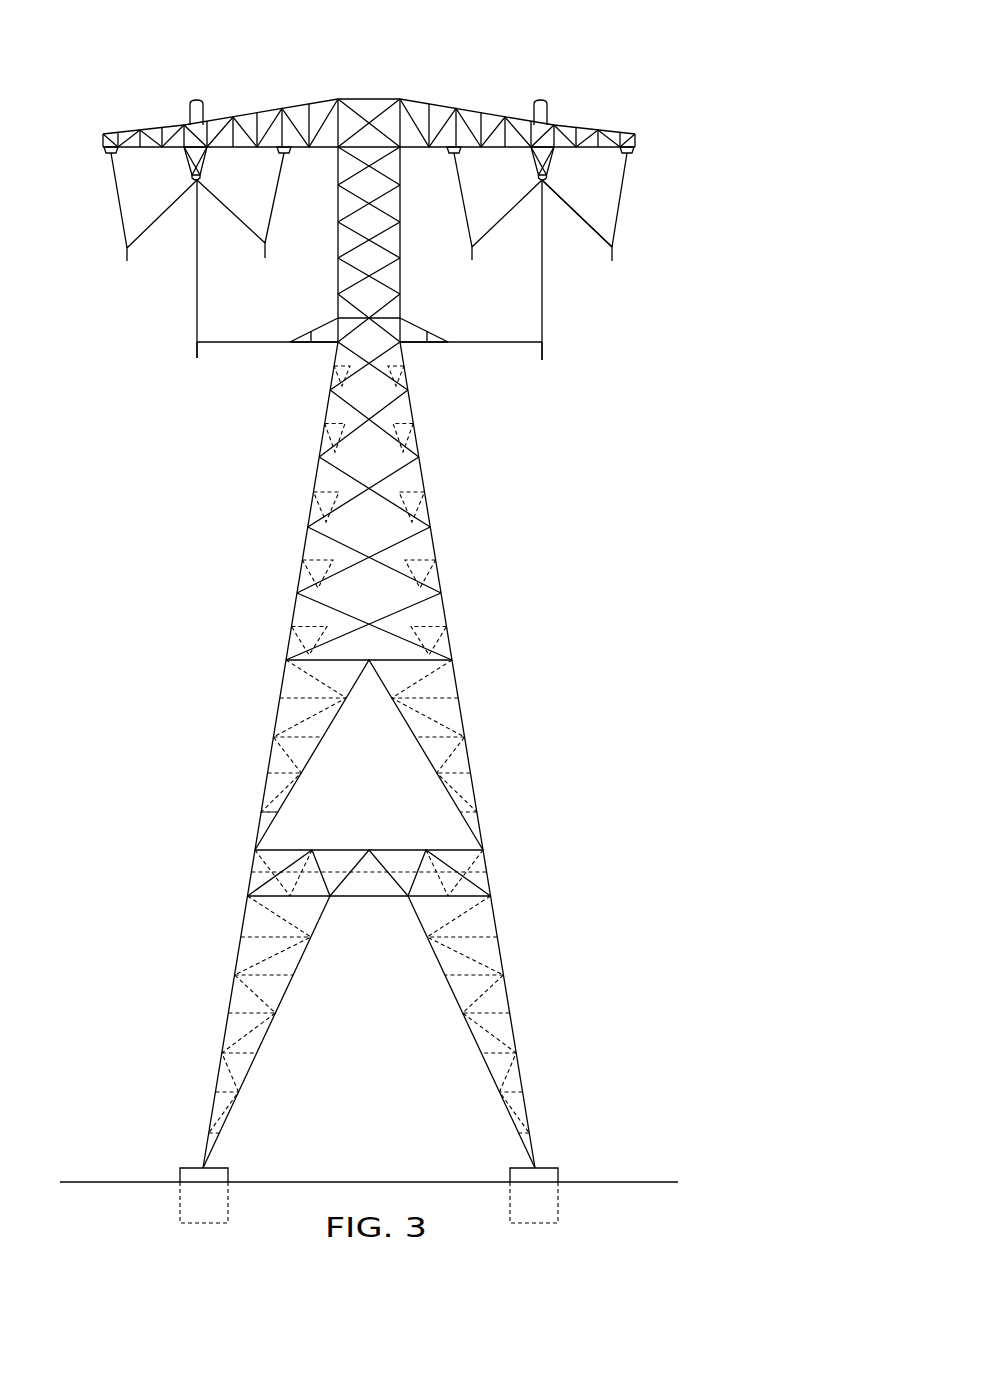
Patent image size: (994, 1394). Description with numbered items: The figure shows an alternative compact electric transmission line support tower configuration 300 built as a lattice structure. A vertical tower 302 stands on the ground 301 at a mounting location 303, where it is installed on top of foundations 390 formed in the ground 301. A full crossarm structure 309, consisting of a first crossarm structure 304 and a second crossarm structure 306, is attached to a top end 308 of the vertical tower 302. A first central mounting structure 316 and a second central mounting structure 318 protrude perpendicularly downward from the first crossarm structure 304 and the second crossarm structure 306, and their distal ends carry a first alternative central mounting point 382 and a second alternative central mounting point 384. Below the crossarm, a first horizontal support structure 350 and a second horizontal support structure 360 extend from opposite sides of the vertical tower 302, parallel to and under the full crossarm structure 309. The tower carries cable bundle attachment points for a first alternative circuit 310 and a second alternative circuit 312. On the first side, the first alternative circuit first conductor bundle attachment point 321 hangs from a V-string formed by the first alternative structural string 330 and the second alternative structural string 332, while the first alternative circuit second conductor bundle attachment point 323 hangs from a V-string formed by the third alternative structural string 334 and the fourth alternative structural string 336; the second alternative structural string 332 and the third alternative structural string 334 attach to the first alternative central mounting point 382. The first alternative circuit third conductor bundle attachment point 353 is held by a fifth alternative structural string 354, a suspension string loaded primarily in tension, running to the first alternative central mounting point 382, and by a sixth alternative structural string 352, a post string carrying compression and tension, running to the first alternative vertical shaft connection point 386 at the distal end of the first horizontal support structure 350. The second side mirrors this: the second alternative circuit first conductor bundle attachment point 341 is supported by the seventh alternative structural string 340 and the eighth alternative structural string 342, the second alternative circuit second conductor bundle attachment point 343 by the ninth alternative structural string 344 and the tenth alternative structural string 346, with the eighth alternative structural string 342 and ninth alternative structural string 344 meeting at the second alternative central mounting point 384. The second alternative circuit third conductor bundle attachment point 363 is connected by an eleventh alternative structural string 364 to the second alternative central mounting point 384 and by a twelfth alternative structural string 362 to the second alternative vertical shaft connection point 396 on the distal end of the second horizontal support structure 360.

The alternative compact electric transmission line support tower configuration 300 is at (433, 619).
The ground 301 is at (115, 1182).
The vertical tower 302 is at (400, 755).
The mounting location 303 is at (369, 1159).
The first crossarm structure 304 is at (147, 100).
The second crossarm structure 306 is at (590, 103).
The top end 308 is at (362, 82).
The full crossarm structure 309 is at (366, 175).
The first alternative circuit 310 is at (189, 300).
The second alternative circuit 312 is at (547, 301).
The first central mounting structure 316 is at (183, 165).
The second central mounting structure 318 is at (550, 162).
The first alternative circuit first conductor bundle attachment point 321 is at (125, 258).
The first alternative circuit second conductor bundle attachment point 323 is at (267, 256).
The first alternative structural string 330 is at (113, 184).
The second alternative structural string 332 is at (122, 218).
The third alternative structural string 334 is at (232, 211).
The fourth alternative structural string 336 is at (278, 192).
The seventh alternative structural string 340 is at (460, 190).
The second alternative circuit first conductor bundle attachment point 341 is at (470, 258).
The eighth alternative structural string 342 is at (508, 209).
The second alternative circuit second conductor bundle attachment point 343 is at (614, 258).
The ninth alternative structural string 344 is at (601, 234).
The tenth alternative structural string 346 is at (626, 180).
The first horizontal support structure 350 is at (305, 345).
The sixth alternative structural string 352 is at (250, 342).
The first alternative circuit third conductor bundle attachment point 353 is at (196, 349).
The fifth alternative structural string 354 is at (196, 303).
The second horizontal support structure 360 is at (433, 344).
The twelfth alternative structural string 362 is at (488, 342).
The second alternative circuit third conductor bundle attachment point 363 is at (543, 351).
The eleventh alternative structural string 364 is at (543, 301).
The first alternative central mounting point 382 is at (200, 200).
The second alternative central mounting point 384 is at (544, 200).
The first alternative vertical shaft connection point 386 is at (286, 341).
The foundations 390 is at (178, 1199).
The second alternative vertical shaft connection point 396 is at (452, 341).